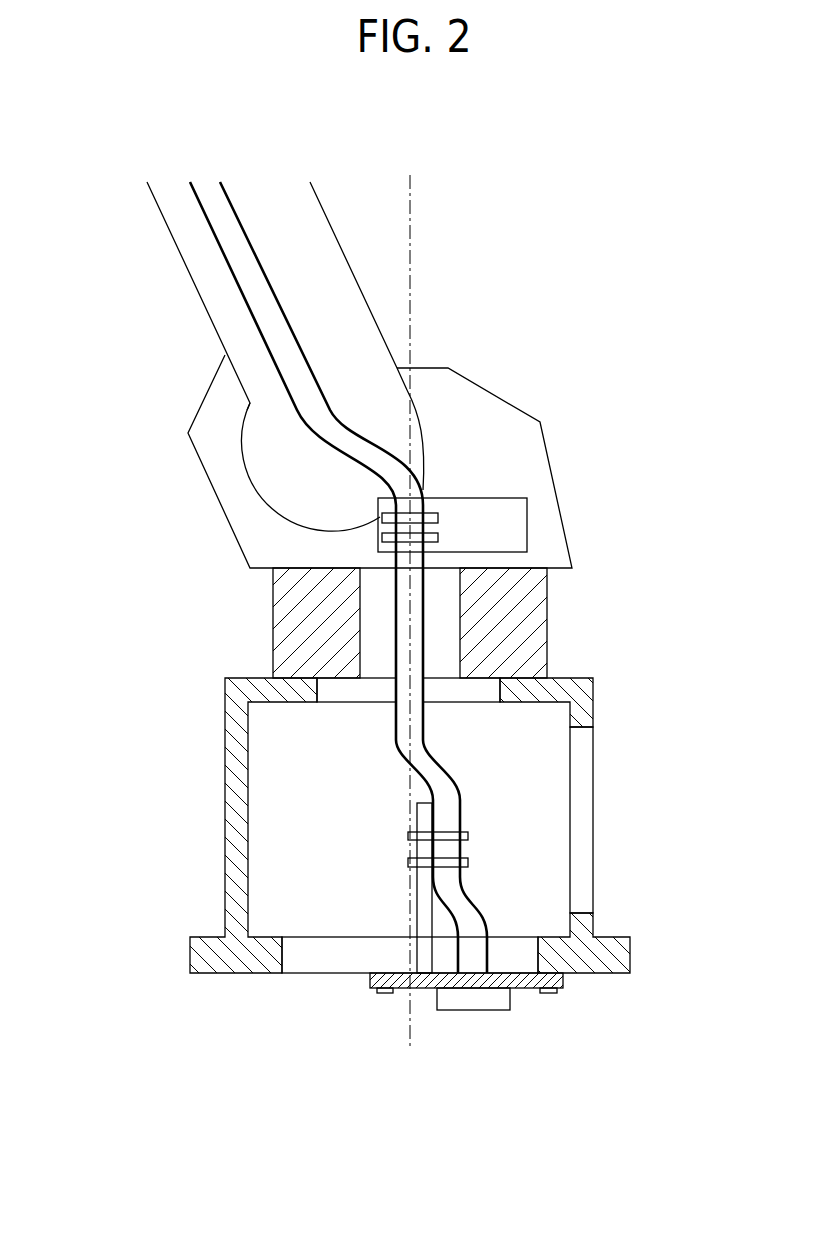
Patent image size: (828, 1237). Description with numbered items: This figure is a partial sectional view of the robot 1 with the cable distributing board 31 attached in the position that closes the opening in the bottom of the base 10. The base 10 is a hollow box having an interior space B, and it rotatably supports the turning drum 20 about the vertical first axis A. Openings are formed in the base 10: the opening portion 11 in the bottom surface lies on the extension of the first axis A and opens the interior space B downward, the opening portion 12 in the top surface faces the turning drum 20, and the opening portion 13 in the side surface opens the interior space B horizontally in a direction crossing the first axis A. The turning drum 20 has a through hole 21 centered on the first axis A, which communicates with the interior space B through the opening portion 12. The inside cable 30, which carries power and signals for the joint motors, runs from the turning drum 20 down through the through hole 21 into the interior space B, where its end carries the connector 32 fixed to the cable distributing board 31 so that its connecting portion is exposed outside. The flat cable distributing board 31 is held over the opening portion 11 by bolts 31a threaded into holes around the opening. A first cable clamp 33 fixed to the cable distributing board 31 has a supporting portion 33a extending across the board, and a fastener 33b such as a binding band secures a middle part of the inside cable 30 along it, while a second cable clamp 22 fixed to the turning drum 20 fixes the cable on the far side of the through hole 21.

The robot 1 is at (137, 255).
The first axis A is at (410, 1025).
The base 10 is at (404, 874).
The opening portion 11 is at (283, 960).
The opening portion 12 is at (318, 695).
The opening portion 13 is at (583, 732).
The interior space B is at (262, 735).
The turning drum 20 is at (417, 516).
The through hole 21 is at (372, 617).
The second cable clamp 22 is at (527, 525).
The inside cable 30 is at (425, 607).
The cable distributing board 31 is at (518, 990).
The bolts 31a is at (380, 993).
The connector 32 is at (468, 1012).
The first cable clamp 33 is at (427, 862).
The supporting portion 33a is at (417, 898).
The fastener 33b is at (468, 834).